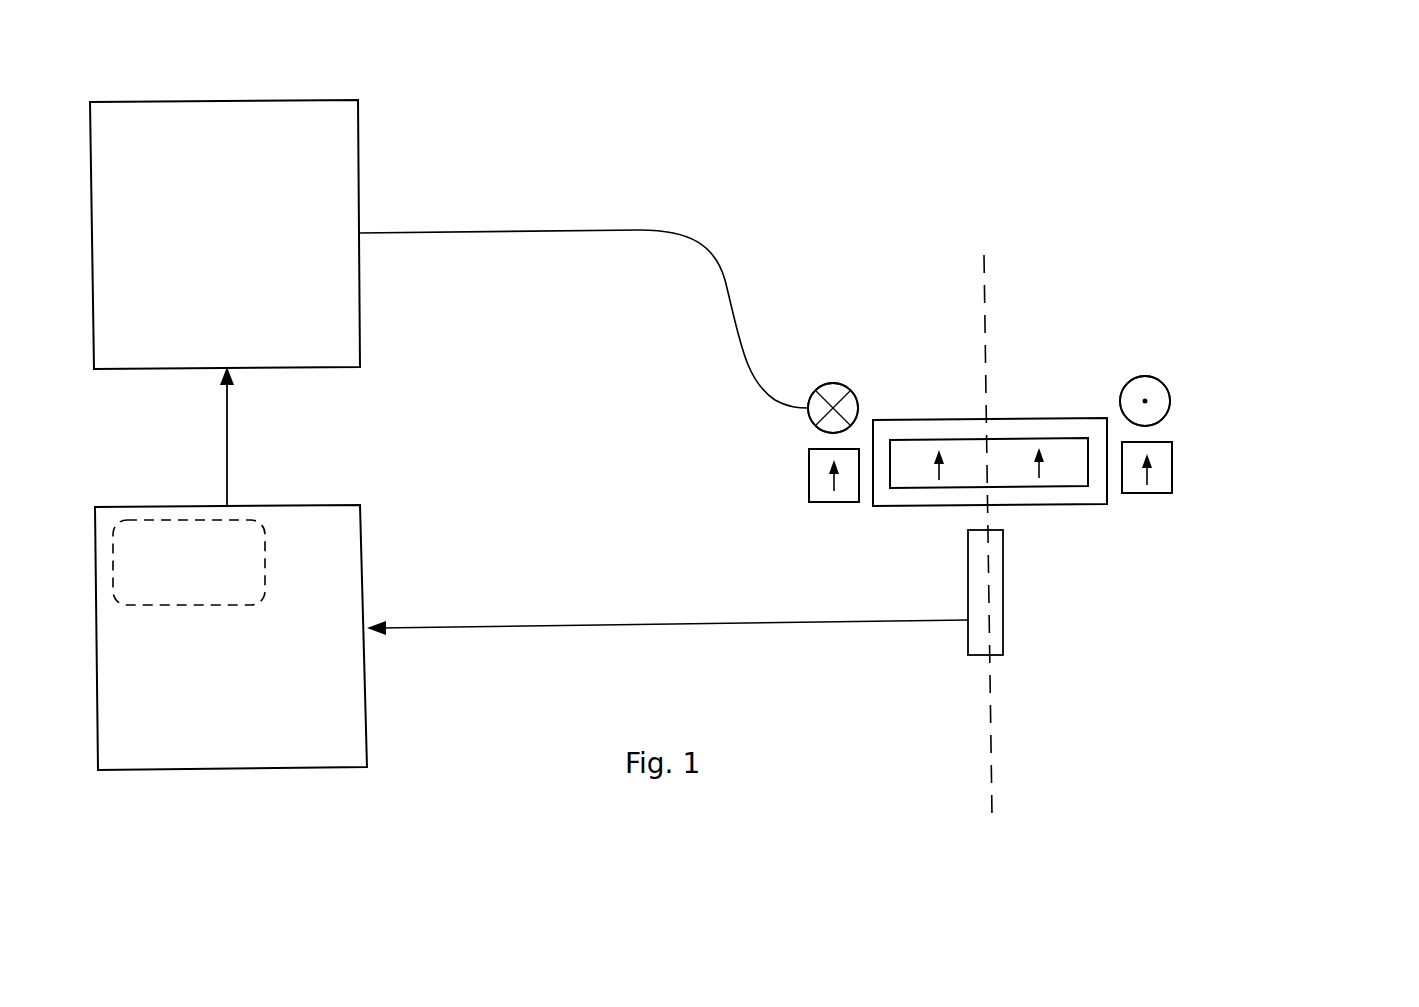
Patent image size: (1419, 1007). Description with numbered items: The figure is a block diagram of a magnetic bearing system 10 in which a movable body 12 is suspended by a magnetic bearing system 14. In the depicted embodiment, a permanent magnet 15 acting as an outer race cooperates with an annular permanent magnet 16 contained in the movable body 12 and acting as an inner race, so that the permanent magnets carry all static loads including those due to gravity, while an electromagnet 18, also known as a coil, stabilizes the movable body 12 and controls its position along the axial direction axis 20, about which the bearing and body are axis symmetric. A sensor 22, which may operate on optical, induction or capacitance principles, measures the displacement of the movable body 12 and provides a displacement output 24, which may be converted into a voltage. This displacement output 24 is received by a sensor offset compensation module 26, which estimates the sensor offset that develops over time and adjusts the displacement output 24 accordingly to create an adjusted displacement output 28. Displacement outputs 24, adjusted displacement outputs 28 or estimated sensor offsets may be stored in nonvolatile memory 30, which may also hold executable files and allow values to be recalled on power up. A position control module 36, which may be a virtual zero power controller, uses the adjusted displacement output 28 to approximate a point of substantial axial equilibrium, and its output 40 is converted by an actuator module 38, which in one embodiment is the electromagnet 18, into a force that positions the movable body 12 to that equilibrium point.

The magnetic bearing system 10 is at (1181, 134).
The movable body 12 is at (1083, 420).
The magnetic bearing system 14 is at (1228, 400).
The permanent magnet 15 is at (1172, 480).
The annular permanent magnet 16 is at (908, 442).
The electromagnet 18 is at (808, 408).
The axial direction axis 20 is at (986, 252).
The sensor 22 is at (1003, 621).
The displacement output 24 is at (600, 628).
The sensor offset compensation module 26 is at (362, 583).
The adjusted displacement output 28 is at (228, 419).
The nonvolatile memory 30 is at (265, 550).
The position control module 36 is at (358, 173).
The actuator module 38 is at (1002, 328).
The output 40 is at (560, 230).